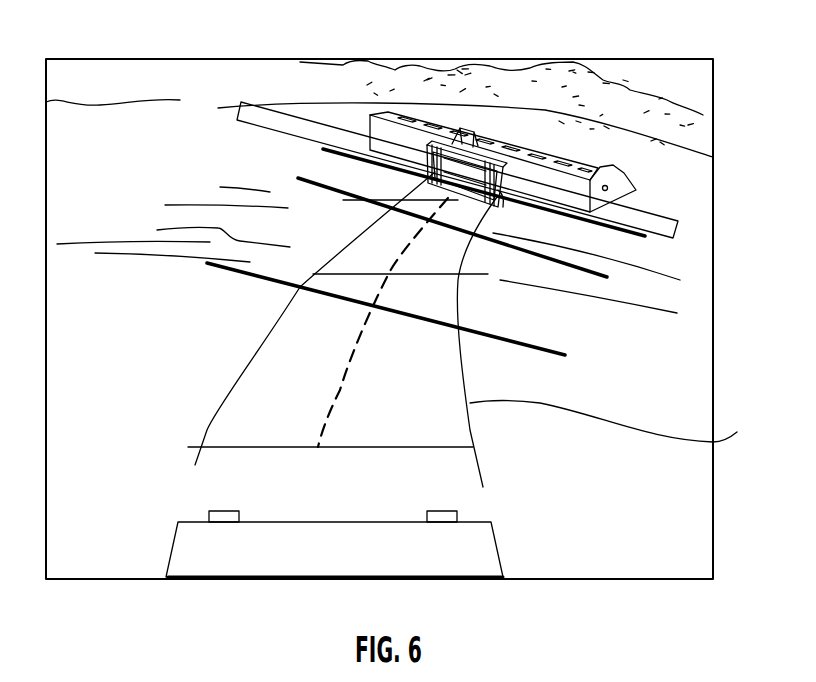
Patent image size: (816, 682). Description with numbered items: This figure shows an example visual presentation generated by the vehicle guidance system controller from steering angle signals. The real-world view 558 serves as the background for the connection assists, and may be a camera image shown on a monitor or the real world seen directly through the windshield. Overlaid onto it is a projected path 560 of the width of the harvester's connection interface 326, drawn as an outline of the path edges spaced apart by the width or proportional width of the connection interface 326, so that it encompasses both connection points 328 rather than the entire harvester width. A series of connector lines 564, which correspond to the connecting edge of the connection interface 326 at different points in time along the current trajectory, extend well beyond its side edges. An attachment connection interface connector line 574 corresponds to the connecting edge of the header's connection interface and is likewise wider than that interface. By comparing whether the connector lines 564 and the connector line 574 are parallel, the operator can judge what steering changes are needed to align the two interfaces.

The connection interface 326 is at (500, 552).
The connection points 328 is at (225, 512).
The real-world view 558 is at (715, 237).
The projected path 560 is at (703, 117).
The connector lines 564 is at (648, 233).
The attachment connection interface connector line 574 is at (350, 132).